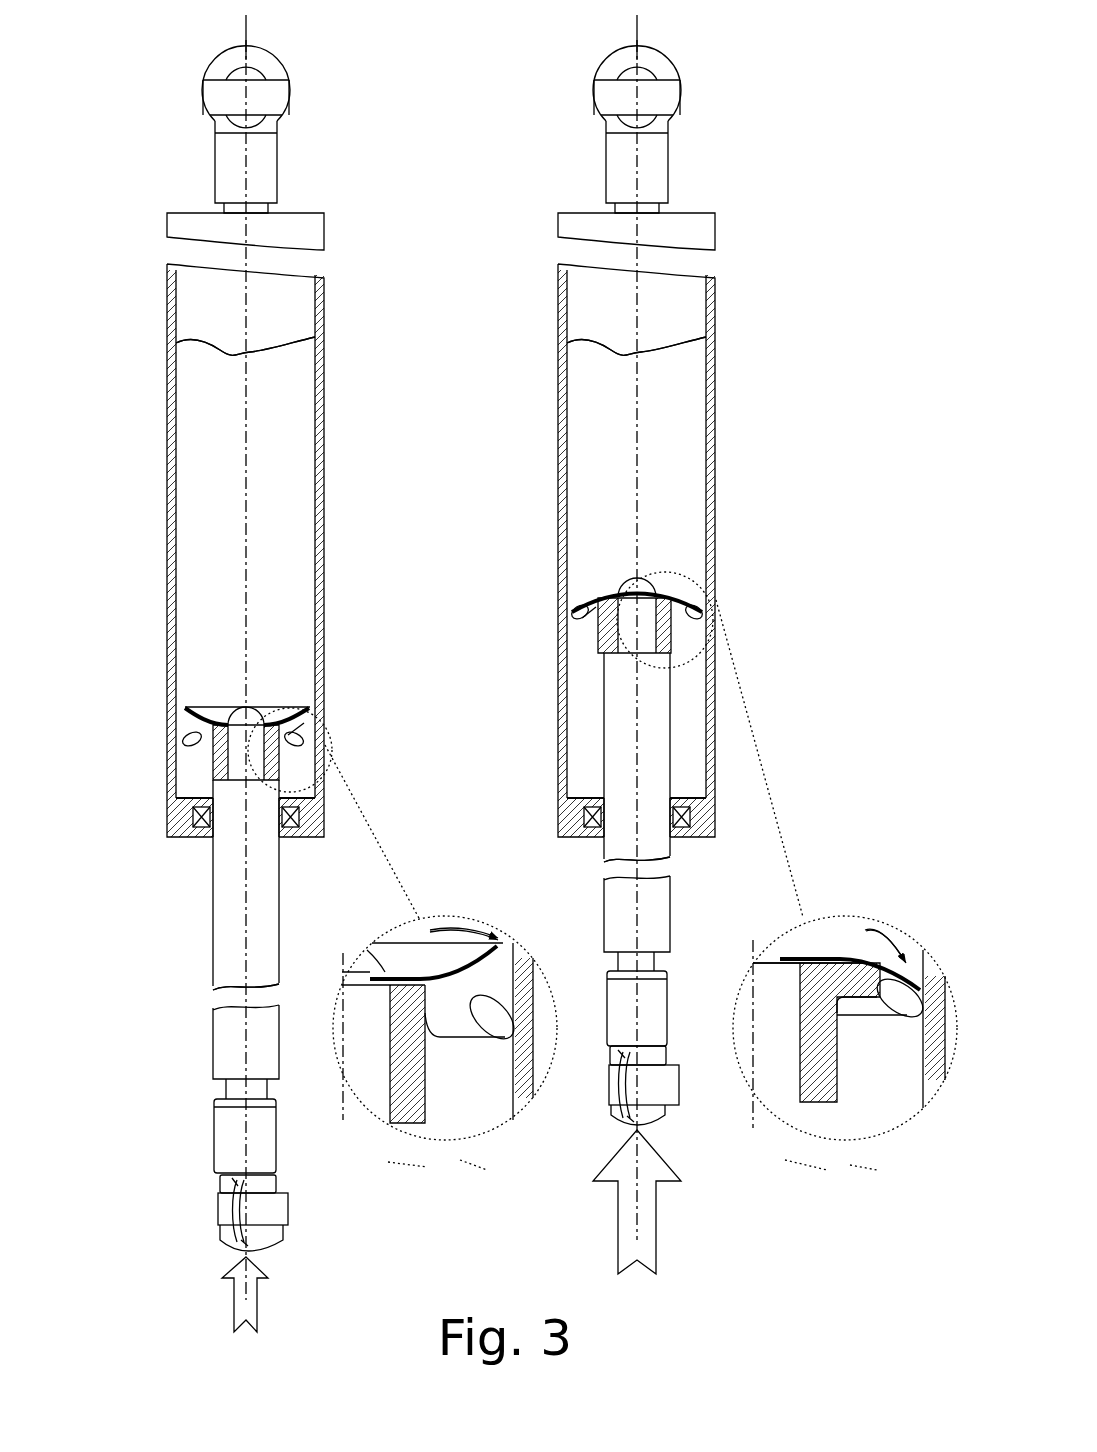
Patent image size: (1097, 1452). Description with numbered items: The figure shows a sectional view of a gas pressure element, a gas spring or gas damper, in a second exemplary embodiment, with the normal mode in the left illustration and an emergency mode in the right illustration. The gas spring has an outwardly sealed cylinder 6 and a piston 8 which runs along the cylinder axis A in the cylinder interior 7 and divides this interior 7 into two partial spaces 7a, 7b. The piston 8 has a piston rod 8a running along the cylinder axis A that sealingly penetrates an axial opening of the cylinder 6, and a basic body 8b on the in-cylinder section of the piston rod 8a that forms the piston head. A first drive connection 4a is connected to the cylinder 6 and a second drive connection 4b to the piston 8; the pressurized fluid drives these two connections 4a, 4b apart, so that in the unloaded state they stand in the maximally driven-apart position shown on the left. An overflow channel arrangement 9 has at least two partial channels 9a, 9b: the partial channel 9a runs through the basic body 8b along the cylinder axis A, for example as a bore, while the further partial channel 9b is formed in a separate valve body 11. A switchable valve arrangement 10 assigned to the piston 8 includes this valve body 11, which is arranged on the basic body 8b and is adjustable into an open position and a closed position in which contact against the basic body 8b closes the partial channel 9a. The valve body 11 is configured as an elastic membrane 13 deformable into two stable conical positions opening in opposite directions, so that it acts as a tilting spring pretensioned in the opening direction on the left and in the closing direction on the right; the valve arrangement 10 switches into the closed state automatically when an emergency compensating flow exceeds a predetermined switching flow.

The cylinder axis A is at (246, 22).
The first drive connection 4a is at (275, 103).
The second drive connection 4b is at (282, 1213).
The cylinder 6 is at (322, 375).
The cylinder interior 7 is at (182, 767).
The partial space 7a is at (277, 482).
The partial space 7b is at (300, 788).
The piston 8 is at (224, 920).
The piston rod 8a is at (275, 900).
The basic body 8b is at (280, 758).
The overflow channel arrangement 9 is at (418, 615).
The partial channel 9a is at (306, 716).
The partial channel 9b is at (198, 698).
The valve arrangement 10 is at (150, 727).
The valve body 11 is at (193, 700).
The elastic membrane 13 is at (668, 946).